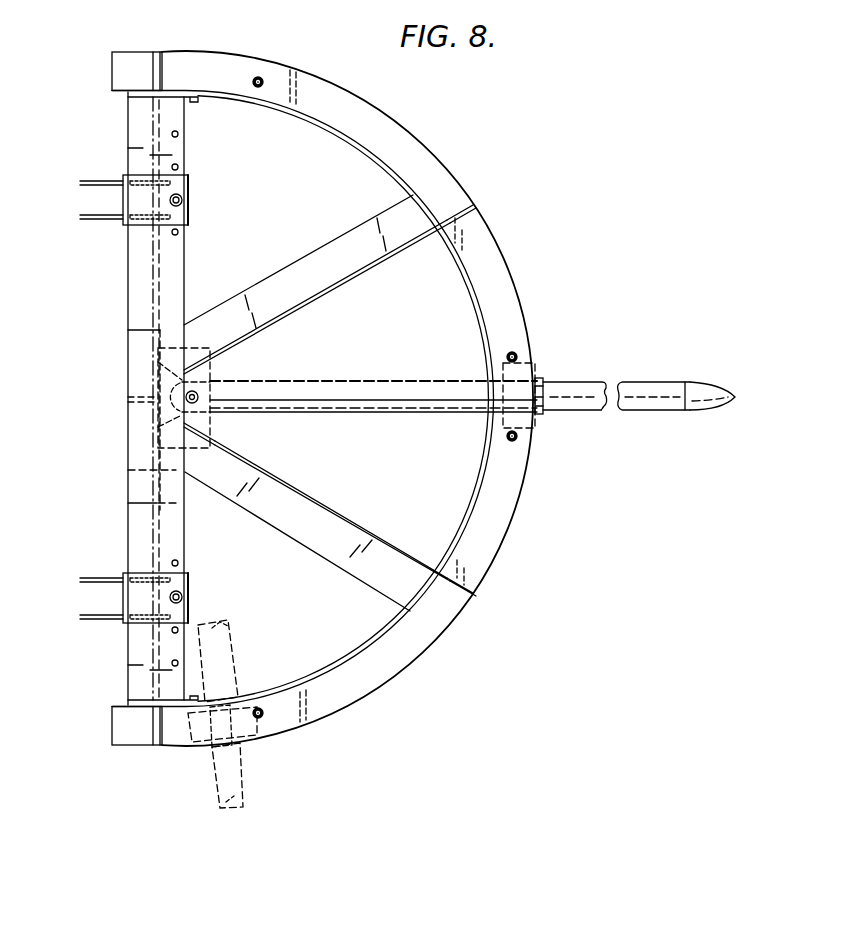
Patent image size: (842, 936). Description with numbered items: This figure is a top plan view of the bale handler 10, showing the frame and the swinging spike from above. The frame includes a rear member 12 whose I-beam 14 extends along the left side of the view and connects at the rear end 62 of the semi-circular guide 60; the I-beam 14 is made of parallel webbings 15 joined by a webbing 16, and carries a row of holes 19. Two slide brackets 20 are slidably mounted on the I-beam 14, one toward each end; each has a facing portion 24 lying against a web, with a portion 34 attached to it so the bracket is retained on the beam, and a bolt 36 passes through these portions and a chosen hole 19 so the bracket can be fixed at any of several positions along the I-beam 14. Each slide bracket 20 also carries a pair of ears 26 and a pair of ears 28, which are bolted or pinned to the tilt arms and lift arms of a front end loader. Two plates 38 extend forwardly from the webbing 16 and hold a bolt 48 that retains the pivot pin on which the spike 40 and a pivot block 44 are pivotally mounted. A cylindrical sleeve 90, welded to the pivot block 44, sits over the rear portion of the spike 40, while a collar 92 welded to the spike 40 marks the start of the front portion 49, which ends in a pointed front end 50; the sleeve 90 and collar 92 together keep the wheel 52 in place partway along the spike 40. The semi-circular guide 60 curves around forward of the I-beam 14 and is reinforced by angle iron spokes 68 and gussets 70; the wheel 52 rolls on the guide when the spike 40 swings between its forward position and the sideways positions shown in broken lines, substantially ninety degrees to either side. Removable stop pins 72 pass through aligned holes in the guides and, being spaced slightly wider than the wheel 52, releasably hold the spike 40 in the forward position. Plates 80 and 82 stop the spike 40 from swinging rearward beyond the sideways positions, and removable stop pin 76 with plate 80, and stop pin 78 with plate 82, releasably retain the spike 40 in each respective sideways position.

The handler 10 is at (448, 144).
The rear member 12 is at (124, 336).
The I-beam 14 is at (131, 419).
The parallel webbings 15 is at (128, 284).
The webbing 16 is at (128, 470).
The holes 19 is at (178, 167).
The slide bracket 20 is at (137, 201).
The facing portion 24 is at (178, 220).
The ears 26 is at (93, 216).
The ears 28 is at (142, 216).
The portion 34 is at (182, 200).
The bolt 36 is at (181, 203).
The plates 38 is at (212, 437).
The spike 40 is at (666, 380).
The pivot block 44 is at (213, 364).
The bolt 48 is at (200, 398).
The front portion 49 is at (626, 411).
The pointed front end 50 is at (700, 390).
The wheel 52 is at (537, 362).
The guide 60 is at (507, 256).
The rear end 62 is at (125, 68).
The angle iron spokes 68 is at (343, 246).
The gussets 70 is at (468, 195).
The stop pins 72 is at (514, 354).
The stop pin 76 is at (262, 717).
The stop pin 78 is at (262, 80).
The plate 80 is at (193, 700).
The plate 82 is at (198, 101).
The cylindrical sleeve 90 is at (360, 379).
The collar 92 is at (543, 412).